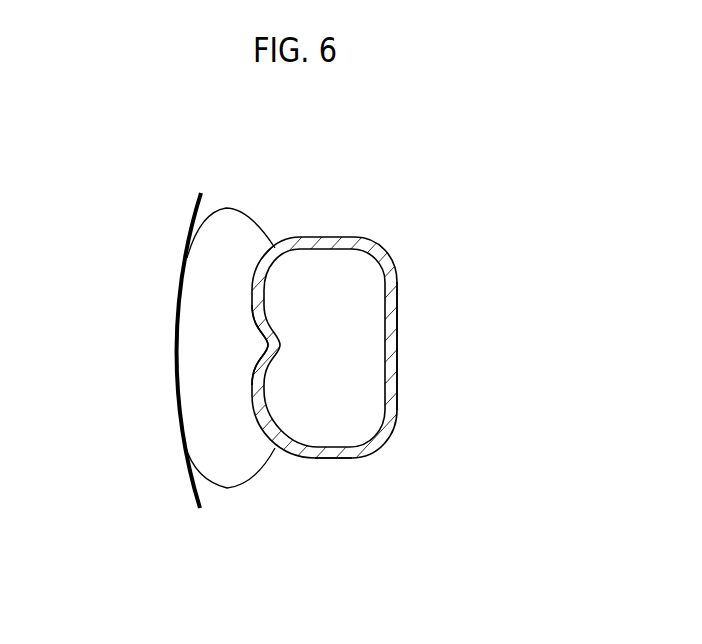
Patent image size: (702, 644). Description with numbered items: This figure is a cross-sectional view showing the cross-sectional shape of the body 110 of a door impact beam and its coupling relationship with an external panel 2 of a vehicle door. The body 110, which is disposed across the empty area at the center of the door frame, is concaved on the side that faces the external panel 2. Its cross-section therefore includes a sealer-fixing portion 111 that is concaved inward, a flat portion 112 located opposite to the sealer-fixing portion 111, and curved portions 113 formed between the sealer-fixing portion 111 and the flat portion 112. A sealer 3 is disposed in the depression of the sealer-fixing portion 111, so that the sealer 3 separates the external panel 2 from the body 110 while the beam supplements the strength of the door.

The external panel 2 is at (175, 350).
The sealer 3 is at (235, 222).
The body 110 is at (377, 221).
The sealer-fixing portion 111 is at (267, 338).
The flat portion 112 is at (390, 339).
The curved portions 113 is at (327, 455).